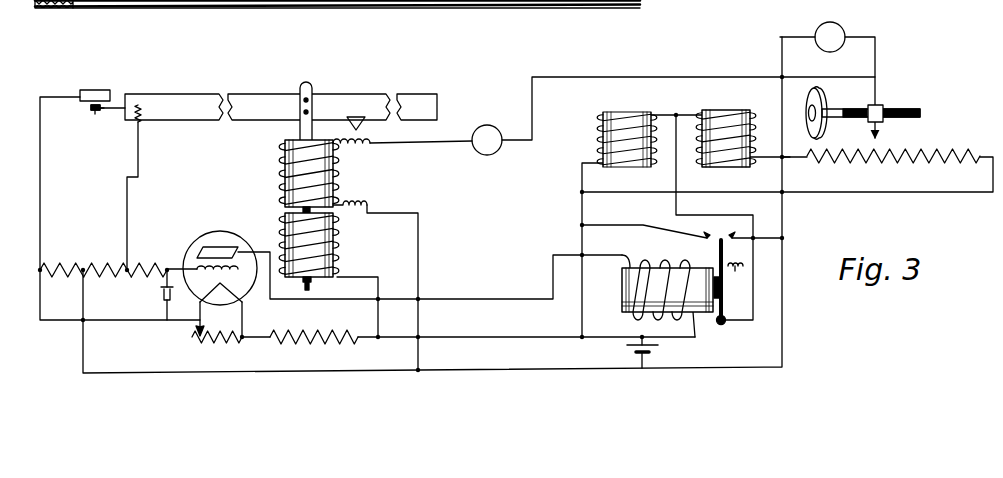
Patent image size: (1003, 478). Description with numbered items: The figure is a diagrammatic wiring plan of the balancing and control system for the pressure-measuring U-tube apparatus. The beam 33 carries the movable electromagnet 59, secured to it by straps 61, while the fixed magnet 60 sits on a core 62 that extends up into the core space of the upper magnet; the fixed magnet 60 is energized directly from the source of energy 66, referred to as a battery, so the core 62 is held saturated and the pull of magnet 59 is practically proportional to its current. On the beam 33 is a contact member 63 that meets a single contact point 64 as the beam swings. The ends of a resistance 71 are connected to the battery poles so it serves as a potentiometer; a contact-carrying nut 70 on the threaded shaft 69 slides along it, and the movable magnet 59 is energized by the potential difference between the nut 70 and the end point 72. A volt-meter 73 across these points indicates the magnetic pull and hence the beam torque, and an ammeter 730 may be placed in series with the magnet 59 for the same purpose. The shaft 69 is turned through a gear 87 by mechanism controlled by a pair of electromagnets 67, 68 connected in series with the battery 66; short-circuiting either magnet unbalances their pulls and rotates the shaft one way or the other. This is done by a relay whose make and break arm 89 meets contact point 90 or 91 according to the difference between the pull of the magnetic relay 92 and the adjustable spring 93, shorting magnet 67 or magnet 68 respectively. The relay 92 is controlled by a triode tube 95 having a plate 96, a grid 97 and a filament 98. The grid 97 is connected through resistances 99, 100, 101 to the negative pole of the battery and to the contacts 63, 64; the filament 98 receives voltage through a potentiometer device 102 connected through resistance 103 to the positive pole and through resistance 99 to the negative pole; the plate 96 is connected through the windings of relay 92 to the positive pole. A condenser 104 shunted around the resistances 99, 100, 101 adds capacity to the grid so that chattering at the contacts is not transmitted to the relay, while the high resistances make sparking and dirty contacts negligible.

The beam 33 is at (250, 101).
The movable electromagnet 59 is at (283, 160).
The fixed electromagnet 60 is at (283, 232).
The straps 61 is at (300, 125).
The core 62 is at (300, 210).
The contact member 63 is at (95, 113).
The contact point 64 is at (93, 92).
The source of electric energy 66 is at (637, 349).
The electromagnet 67 is at (603, 133).
The electromagnet 68 is at (722, 158).
The threaded shaft 69 is at (921, 111).
The contact-carrying nut 70 is at (884, 105).
The resistance 71 is at (876, 160).
The end point of resistance 72 is at (784, 159).
The volt-meter 73 is at (842, 28).
The ammeter 730 is at (490, 125).
The gear 87 is at (808, 100).
The make and break arm 89 is at (719, 250).
The contact point 90 is at (698, 226).
The contact point 91 is at (729, 226).
The magnetic relay 92 is at (625, 285).
The adjustable spring 93 is at (739, 280).
The triode tube 95 is at (194, 238).
The plate 96 is at (213, 247).
The grid 97 is at (210, 266).
The filament 98 is at (238, 292).
The resistance 99 is at (62, 262).
The resistance 100 is at (110, 262).
The resistance 101 is at (148, 262).
The potentiometer device 102 is at (208, 339).
The resistance 103 is at (310, 339).
The condenser 104 is at (165, 308).